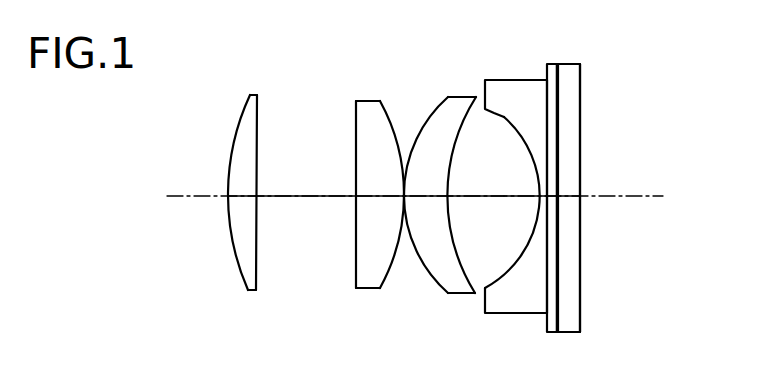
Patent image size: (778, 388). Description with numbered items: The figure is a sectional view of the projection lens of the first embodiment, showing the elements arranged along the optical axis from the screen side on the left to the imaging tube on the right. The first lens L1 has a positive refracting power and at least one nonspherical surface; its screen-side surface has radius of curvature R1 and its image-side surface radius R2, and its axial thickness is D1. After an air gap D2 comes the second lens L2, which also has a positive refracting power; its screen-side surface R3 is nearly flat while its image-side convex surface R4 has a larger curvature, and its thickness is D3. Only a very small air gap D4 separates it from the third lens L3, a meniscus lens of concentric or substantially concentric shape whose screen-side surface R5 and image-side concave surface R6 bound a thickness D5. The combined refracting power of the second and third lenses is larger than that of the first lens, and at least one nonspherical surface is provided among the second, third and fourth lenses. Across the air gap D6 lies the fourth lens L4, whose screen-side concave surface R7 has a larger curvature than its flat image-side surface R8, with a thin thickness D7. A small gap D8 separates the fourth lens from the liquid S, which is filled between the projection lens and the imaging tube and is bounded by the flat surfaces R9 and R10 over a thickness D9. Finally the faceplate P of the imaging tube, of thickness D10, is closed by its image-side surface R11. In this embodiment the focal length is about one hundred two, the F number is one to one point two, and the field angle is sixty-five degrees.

The first lens L1 is at (250, 184).
The second lens L2 is at (369, 183).
The third lens L3 is at (449, 183).
The fourth lens L4 is at (522, 183).
The liquid S is at (570, 189).
The faceplate P is at (612, 189).
The radius of curvature of first surface R1 is at (248, 118).
The radius of curvature of second surface R2 is at (258, 117).
The radius of curvature of third surface R3 is at (354, 117).
The radius of curvature of fourth surface R4 is at (388, 114).
The radius of curvature of fifth surface R5 is at (436, 106).
The radius of curvature of sixth surface R6 is at (475, 97).
The radius of curvature of seventh surface R7 is at (497, 120).
The radius of curvature of eighth surface R8 is at (547, 95).
The radius of curvature of ninth surface R9 is at (558, 78).
The radius of curvature of tenth surface R10 is at (561, 76).
The radius of curvature of eleventh surface R11 is at (580, 78).
The thickness of first lens D1 is at (238, 197).
The air gap between first and second lenses D2 is at (318, 197).
The thickness of second lens D3 is at (381, 199).
The air gap between second and third lenses D4 is at (404, 230).
The thickness of third lens D5 is at (437, 199).
The air gap between third and fourth lenses D6 is at (487, 199).
The thickness of fourth lens D7 is at (533, 200).
The gap between fourth lens and liquid D8 is at (547, 199).
The thickness of liquid D9 is at (556, 199).
The thickness of faceplate D10 is at (563, 199).